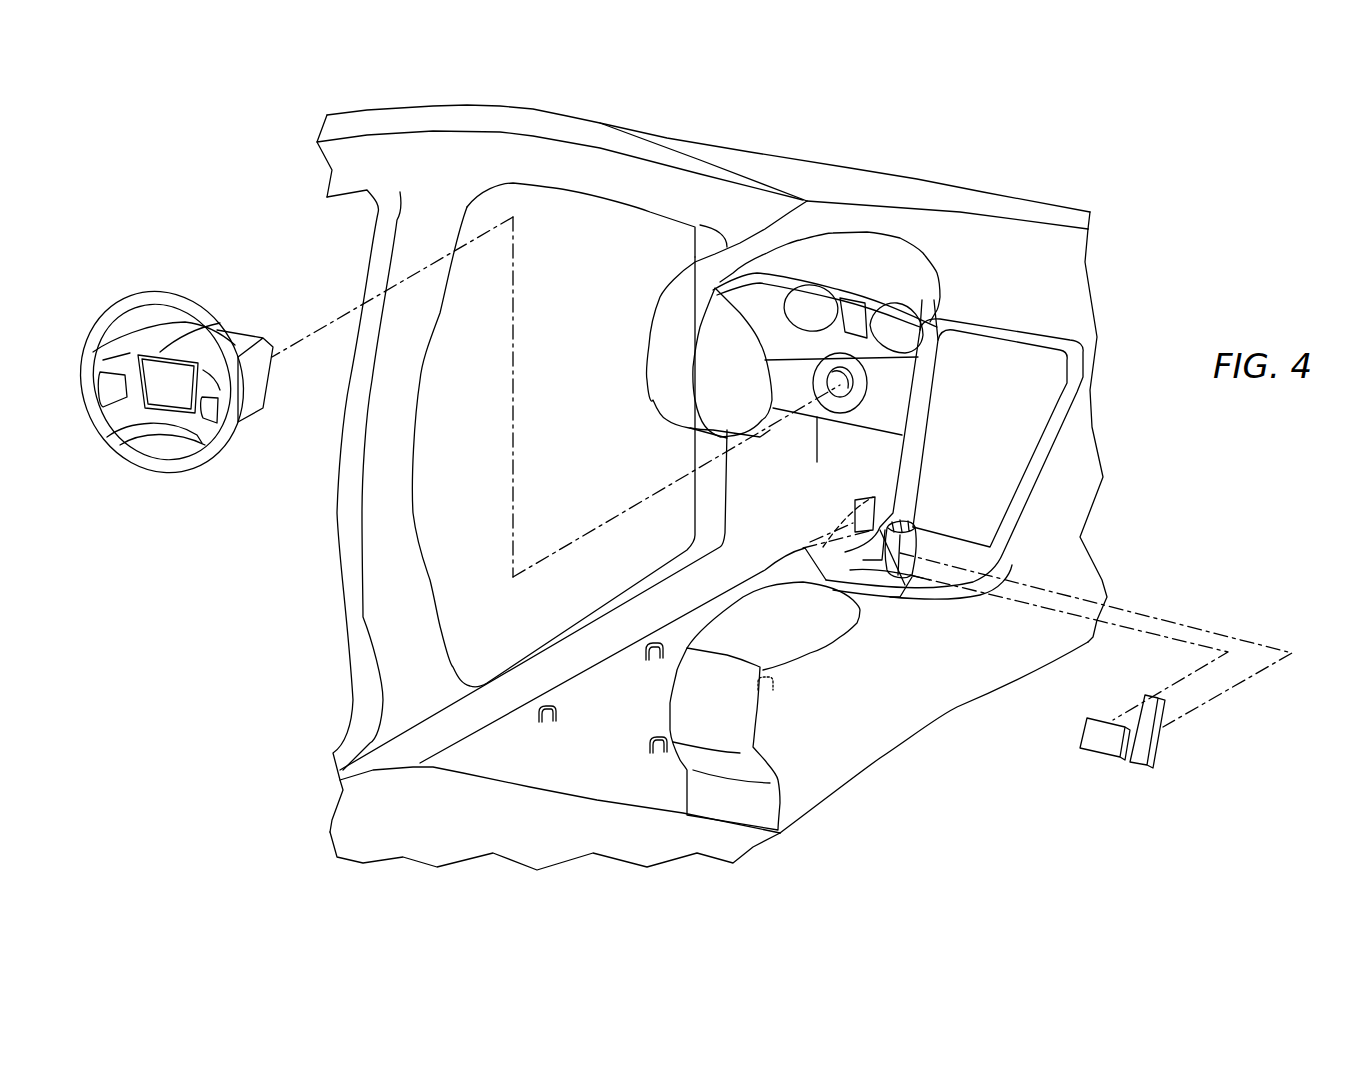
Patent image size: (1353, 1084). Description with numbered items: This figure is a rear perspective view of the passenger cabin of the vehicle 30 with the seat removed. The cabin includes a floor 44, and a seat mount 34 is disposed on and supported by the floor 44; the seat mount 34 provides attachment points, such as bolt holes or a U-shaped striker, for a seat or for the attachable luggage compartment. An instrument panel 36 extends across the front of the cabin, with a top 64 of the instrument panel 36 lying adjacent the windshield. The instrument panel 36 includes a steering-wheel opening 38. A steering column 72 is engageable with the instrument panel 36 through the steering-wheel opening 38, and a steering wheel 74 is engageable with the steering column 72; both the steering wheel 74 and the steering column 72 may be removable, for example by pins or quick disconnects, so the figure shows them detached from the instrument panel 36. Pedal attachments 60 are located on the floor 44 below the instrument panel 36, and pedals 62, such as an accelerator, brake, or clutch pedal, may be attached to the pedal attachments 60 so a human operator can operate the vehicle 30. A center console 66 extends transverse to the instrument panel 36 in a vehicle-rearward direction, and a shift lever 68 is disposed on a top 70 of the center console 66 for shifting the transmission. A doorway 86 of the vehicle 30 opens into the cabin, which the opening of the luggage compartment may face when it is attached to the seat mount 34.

The vehicle 30 is at (1201, 151).
The seat mount 34 is at (645, 640).
The instrument panel 36 is at (652, 320).
The steering-wheel opening 38 is at (812, 370).
The floor 44 is at (515, 833).
The pedal attachments 60 is at (865, 497).
The pedals 62 is at (1100, 758).
The top of the instrument panel 64 is at (983, 210).
The center console 66 is at (887, 713).
The shift lever 68 is at (912, 530).
The top of the center console 70 is at (933, 603).
The steering column 72 is at (230, 320).
The steering wheel 74 is at (125, 295).
The doorway 86 is at (562, 190).